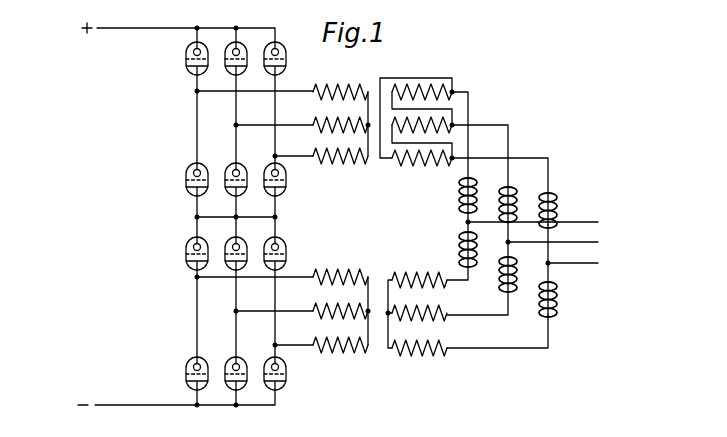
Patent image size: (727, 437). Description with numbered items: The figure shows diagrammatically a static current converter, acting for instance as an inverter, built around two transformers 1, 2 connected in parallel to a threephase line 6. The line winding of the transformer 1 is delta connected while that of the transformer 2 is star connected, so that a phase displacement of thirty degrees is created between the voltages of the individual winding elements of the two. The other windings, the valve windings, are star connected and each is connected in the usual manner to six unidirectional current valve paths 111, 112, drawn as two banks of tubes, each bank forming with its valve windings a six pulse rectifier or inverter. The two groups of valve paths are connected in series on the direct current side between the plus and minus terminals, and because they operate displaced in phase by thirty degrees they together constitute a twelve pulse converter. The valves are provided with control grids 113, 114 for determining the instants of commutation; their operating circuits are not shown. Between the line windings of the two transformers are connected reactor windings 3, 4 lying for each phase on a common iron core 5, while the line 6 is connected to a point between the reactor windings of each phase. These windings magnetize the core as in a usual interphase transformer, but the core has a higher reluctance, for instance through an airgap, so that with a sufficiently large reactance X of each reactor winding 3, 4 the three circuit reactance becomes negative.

The transformer 1 is at (372, 89).
The transformer 2 is at (378, 348).
The interphase transformer reactor winding 3 is at (545, 192).
The interphase transformer reactor winding 4 is at (545, 303).
The common iron core 5 is at (550, 186).
The line 6 is at (600, 215).
The unidirectional current valve paths 111 is at (188, 165).
The unidirectional current valve paths 112 is at (188, 358).
The control grids 113 is at (187, 173).
The control grids 114 is at (187, 368).